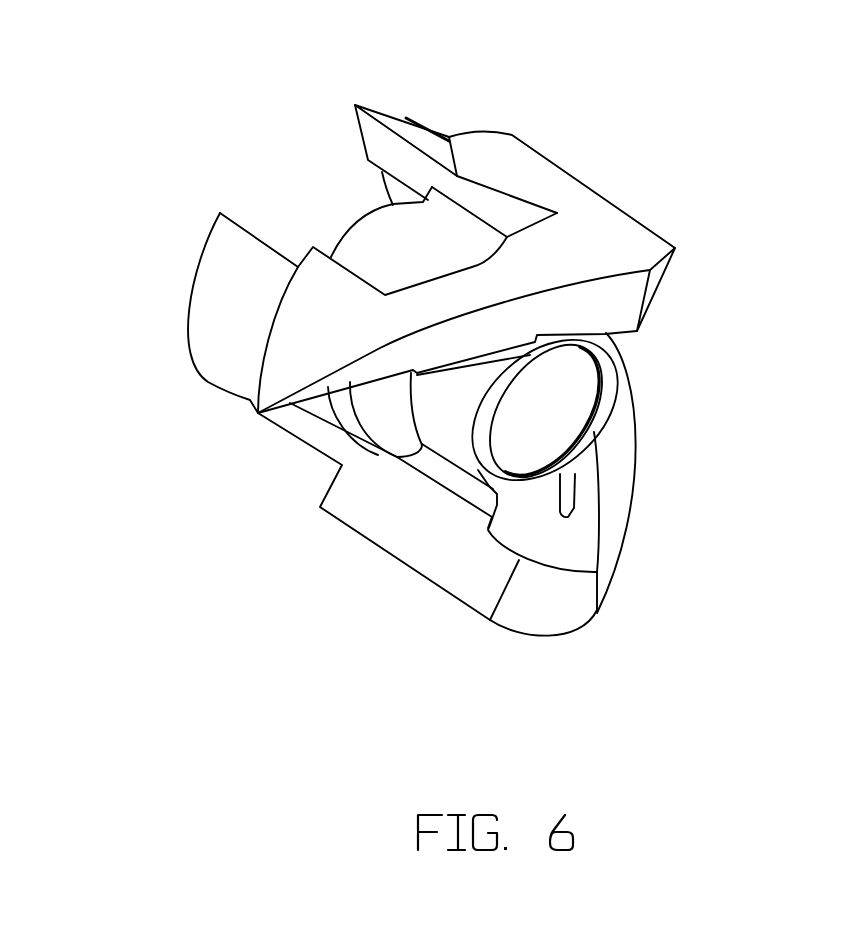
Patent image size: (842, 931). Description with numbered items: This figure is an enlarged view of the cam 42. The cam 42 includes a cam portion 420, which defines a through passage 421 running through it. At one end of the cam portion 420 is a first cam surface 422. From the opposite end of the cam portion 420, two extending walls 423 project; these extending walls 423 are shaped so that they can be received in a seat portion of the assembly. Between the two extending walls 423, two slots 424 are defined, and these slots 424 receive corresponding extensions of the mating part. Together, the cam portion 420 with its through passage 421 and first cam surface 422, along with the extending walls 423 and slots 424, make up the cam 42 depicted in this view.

The cam 42 is at (499, 92).
The cam portion 420 is at (597, 238).
The through passage 421 is at (543, 399).
The first cam surface 422 is at (602, 299).
The extending walls 423 is at (228, 288).
The slots 424 is at (383, 245).